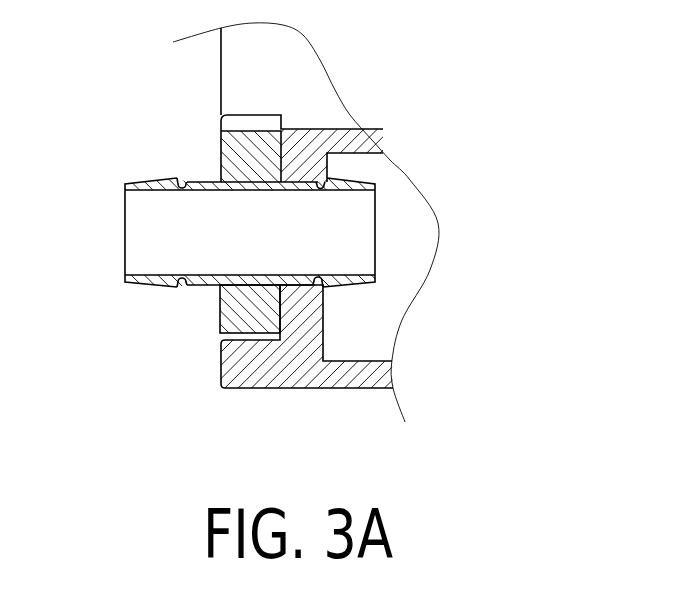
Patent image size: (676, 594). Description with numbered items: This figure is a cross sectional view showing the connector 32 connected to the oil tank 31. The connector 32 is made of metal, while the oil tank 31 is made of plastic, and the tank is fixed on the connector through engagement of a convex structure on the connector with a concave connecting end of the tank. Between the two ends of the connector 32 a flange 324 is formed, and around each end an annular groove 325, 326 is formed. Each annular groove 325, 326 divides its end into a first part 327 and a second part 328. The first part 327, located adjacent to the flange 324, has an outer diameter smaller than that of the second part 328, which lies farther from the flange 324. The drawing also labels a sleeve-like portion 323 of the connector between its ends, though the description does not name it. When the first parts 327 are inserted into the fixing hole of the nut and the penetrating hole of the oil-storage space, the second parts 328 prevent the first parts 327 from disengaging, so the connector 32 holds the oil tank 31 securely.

The oil tank 31 is at (315, 105).
The connector 32 is at (205, 328).
The sleeve 323 is at (360, 250).
The flange 324 is at (258, 318).
The annular groove 325 is at (184, 178).
The annular groove 326 is at (321, 181).
The first part 327 is at (198, 287).
The second part 328 is at (142, 186).